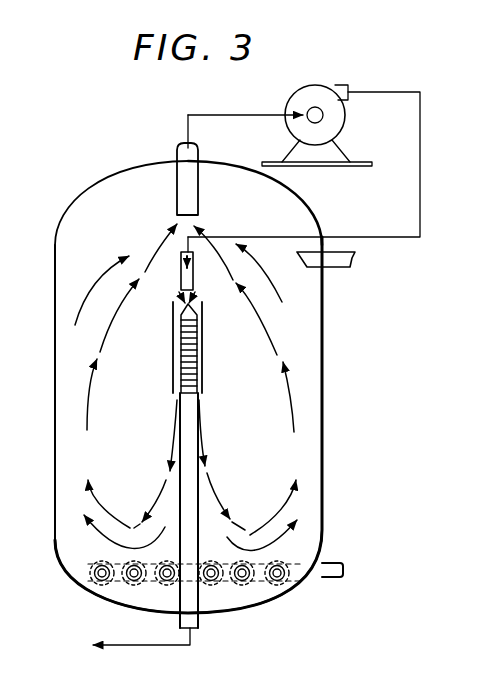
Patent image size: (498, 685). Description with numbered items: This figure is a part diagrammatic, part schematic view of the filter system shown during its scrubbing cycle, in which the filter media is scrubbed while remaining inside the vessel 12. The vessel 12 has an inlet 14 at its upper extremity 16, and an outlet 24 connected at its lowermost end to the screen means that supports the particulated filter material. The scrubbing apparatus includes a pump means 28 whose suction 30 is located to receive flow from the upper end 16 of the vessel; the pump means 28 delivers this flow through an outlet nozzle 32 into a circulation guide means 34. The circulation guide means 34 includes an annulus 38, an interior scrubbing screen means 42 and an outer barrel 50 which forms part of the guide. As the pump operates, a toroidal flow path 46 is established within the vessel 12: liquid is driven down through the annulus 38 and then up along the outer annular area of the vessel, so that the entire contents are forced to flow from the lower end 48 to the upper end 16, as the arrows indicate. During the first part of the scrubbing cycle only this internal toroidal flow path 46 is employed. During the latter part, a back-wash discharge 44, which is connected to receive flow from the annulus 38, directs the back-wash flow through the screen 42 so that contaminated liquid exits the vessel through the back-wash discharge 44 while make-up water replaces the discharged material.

The vessel 12 is at (323, 372).
The inlet 14 is at (350, 268).
The upper extremity 16 is at (114, 199).
The outlet 24 is at (334, 562).
The pump means 28 is at (336, 78).
The suction 30 is at (177, 150).
The outlet nozzle 32 is at (181, 280).
The circulation guide means 34 is at (171, 340).
The annulus 38 is at (201, 348).
The interior scrubbing screen means 42 is at (182, 369).
The back-wash discharge 44 is at (200, 621).
The toroidal flow path 46 is at (297, 443).
The lower end 48 is at (290, 556).
The outer barrel 50 is at (204, 383).